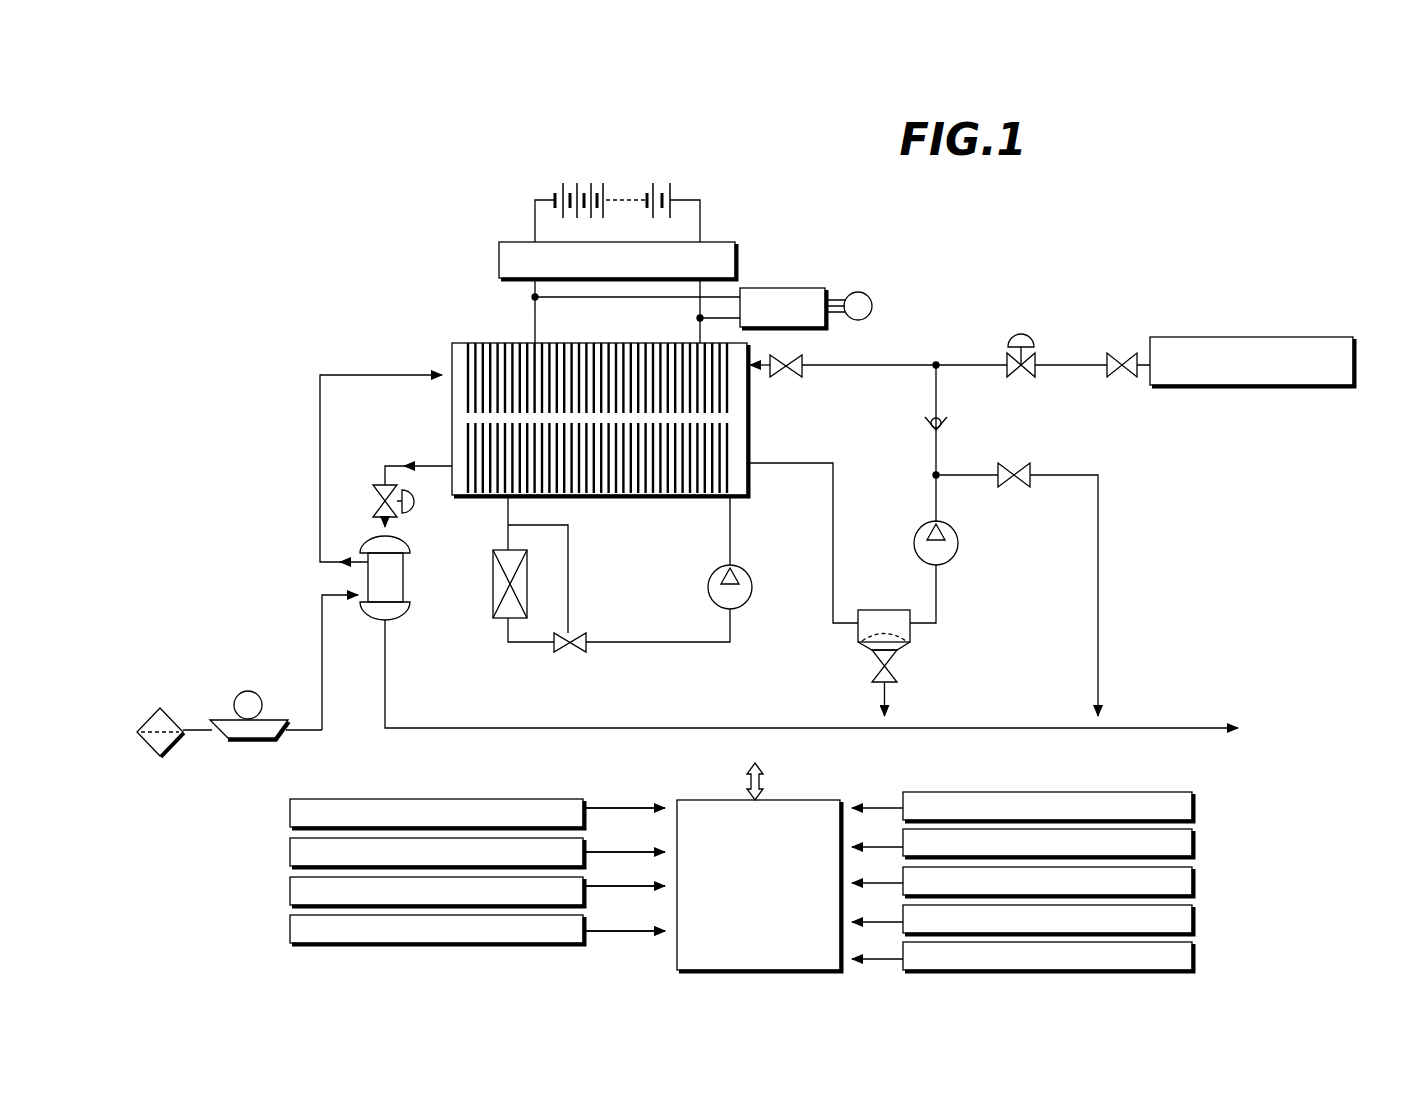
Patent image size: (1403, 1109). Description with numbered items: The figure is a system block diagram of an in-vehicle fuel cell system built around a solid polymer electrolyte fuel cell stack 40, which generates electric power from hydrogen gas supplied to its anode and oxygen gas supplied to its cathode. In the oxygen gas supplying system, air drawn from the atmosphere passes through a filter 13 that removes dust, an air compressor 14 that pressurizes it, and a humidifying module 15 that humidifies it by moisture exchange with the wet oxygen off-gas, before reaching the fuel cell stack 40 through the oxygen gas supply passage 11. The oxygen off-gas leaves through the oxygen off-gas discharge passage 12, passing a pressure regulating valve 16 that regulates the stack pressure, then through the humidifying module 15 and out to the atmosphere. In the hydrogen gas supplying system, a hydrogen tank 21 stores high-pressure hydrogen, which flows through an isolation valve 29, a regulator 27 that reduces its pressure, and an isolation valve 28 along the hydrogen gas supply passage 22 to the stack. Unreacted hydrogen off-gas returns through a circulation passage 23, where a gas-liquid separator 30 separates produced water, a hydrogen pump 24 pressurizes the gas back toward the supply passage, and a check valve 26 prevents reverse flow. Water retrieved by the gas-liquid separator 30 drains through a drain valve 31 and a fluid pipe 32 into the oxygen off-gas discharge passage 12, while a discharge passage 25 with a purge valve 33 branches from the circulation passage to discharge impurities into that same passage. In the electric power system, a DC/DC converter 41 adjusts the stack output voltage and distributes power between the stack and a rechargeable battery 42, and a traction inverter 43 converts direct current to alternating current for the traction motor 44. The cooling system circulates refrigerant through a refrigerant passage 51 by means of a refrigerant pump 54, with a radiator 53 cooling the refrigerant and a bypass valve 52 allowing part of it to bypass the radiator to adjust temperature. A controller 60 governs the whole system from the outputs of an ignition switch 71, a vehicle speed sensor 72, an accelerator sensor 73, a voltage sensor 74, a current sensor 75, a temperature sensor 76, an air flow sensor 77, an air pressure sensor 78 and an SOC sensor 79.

The oxygen gas supply passage 11 is at (320, 482).
The oxygen off-gas discharge passage 12 is at (440, 466).
The filter 13 is at (157, 710).
The air compressor 14 is at (240, 692).
The humidifying module 15 is at (403, 578).
The pressure regulating valve 16 is at (417, 508).
The hydrogen tank 21 is at (1253, 337).
The hydrogen gas supply passage 22 is at (1078, 363).
The circulation passage 23 is at (786, 465).
The hydrogen pump 24 is at (958, 540).
The discharge passage 25 is at (1098, 585).
The check valve 26 is at (927, 425).
The regulator 27 is at (1021, 334).
The isolation valve 28 is at (778, 378).
The isolation valve 29 is at (1112, 378).
The gas-liquid separator 30 is at (893, 610).
The drain valve 31 is at (870, 656).
The fluid pipe 32 is at (886, 692).
The purge valve 33 is at (1022, 463).
The fuel cell stack 40 is at (612, 497).
The DC/DC converter 41 is at (735, 250).
The rechargeable battery 42 is at (622, 196).
The traction inverter 43 is at (810, 288).
The traction motor 44 is at (876, 300).
The refrigerant passage 51 is at (632, 642).
The bypass valve 52 is at (566, 652).
The radiator 53 is at (527, 575).
The refrigerant pump 54 is at (752, 590).
The controller 60 is at (676, 840).
The ignition switch 71 is at (288, 822).
The vehicle speed sensor 72 is at (288, 858).
The accelerator sensor 73 is at (288, 896).
The voltage sensor 74 is at (288, 933).
The current sensor 75 is at (1195, 810).
The temperature sensor 76 is at (1195, 848).
The air flow sensor 77 is at (1195, 885).
The air pressure sensor 78 is at (1195, 923).
The SOC sensor 79 is at (1195, 958).